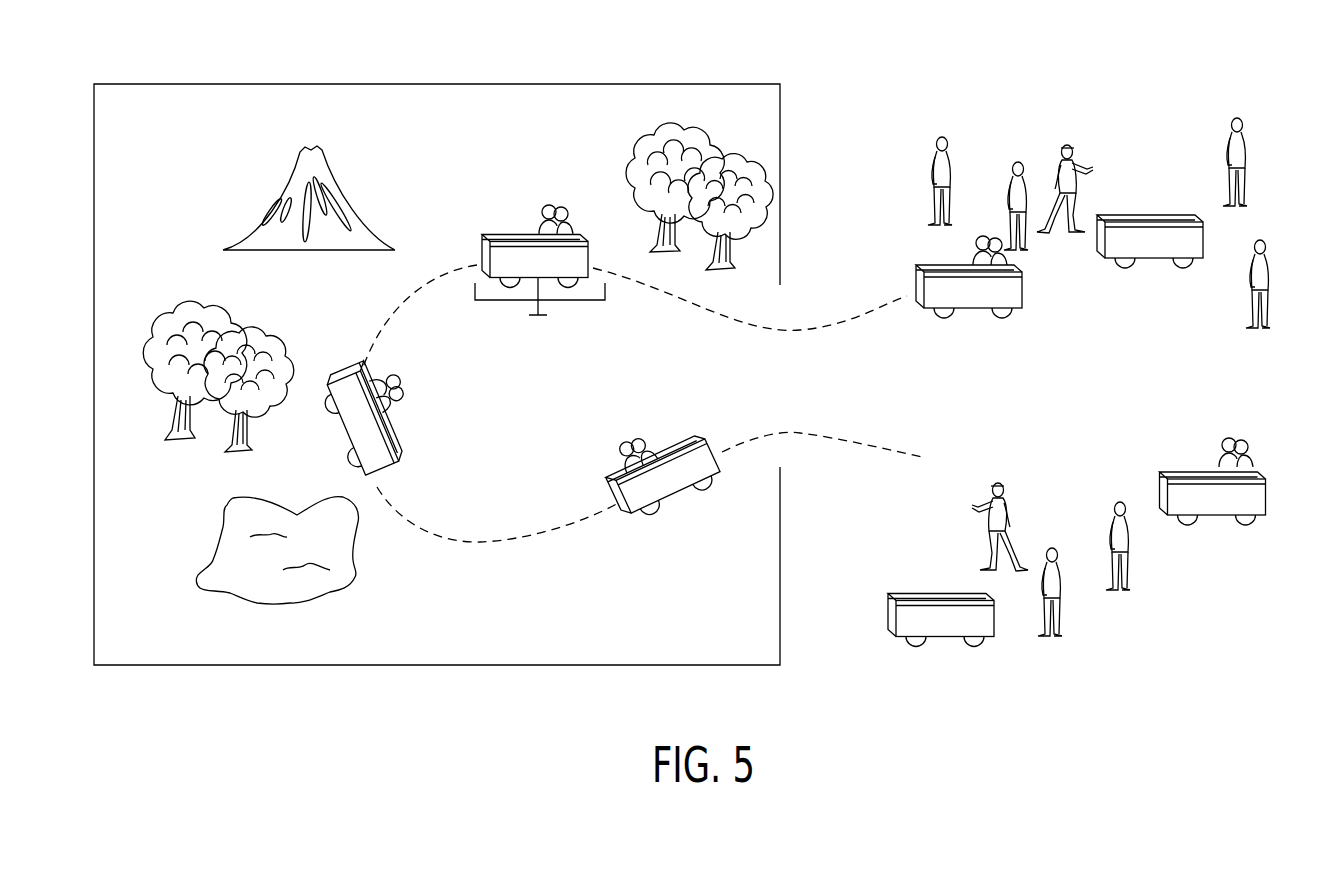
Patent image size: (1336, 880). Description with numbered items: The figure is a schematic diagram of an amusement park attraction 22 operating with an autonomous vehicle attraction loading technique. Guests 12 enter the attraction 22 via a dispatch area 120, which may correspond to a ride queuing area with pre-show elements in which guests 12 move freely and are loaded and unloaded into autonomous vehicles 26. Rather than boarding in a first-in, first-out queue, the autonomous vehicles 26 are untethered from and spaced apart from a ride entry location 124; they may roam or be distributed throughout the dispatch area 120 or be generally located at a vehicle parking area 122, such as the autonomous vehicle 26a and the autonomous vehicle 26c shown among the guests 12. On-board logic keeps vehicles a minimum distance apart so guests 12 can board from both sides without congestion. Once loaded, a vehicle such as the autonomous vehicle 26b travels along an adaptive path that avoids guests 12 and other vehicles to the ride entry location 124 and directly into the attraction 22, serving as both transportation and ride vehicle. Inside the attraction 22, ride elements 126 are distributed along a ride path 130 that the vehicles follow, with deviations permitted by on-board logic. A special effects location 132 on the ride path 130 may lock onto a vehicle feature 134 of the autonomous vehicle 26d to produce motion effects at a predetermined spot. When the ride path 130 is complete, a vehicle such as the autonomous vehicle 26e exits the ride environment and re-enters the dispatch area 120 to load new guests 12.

The guests 12 is at (1100, 407).
The amusement park attraction 22 is at (228, 63).
The autonomous vehicles 26 is at (395, 473).
The autonomous vehicle 26a is at (1158, 215).
The autonomous vehicle 26b is at (1022, 296).
The autonomous vehicle 26c is at (1265, 500).
The autonomous vehicle 26d is at (503, 235).
The autonomous vehicle 26e is at (677, 498).
The dispatch area 120 is at (1057, 687).
The vehicle parking area 122 is at (1155, 310).
The ride entry location 124 is at (772, 308).
The ride elements 126 is at (273, 215).
The ride path 130 is at (700, 305).
The special effects location 132 is at (495, 301).
The vehicle feature 134 is at (545, 317).